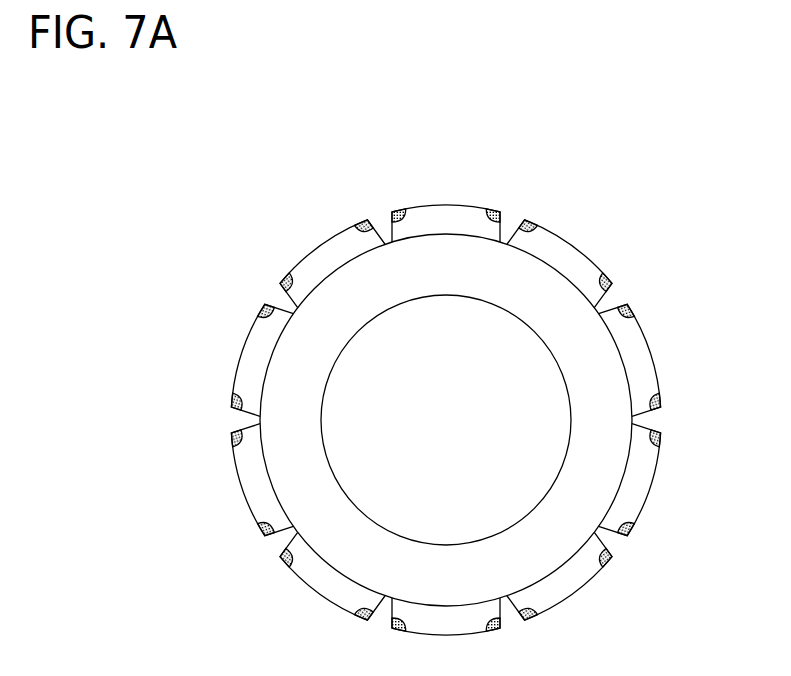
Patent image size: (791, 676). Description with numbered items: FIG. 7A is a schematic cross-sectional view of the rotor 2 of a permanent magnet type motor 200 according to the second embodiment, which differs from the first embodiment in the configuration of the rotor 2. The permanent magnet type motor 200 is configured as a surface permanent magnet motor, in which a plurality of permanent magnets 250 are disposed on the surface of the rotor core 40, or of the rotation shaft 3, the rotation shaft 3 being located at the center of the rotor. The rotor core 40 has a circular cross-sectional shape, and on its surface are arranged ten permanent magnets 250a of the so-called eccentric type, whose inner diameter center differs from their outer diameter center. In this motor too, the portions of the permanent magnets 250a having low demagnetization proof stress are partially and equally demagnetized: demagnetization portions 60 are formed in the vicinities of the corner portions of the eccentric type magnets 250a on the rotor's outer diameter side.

The permanent magnet type motor 200 is at (202, 148).
The rotor 2 is at (285, 262).
The rotation shaft 3 is at (453, 433).
The rotor core 40 is at (563, 511).
The permanent magnets 250 is at (482, 410).
The eccentric type magnet 250a is at (560, 254).
The demagnetization portion 60 is at (623, 310).